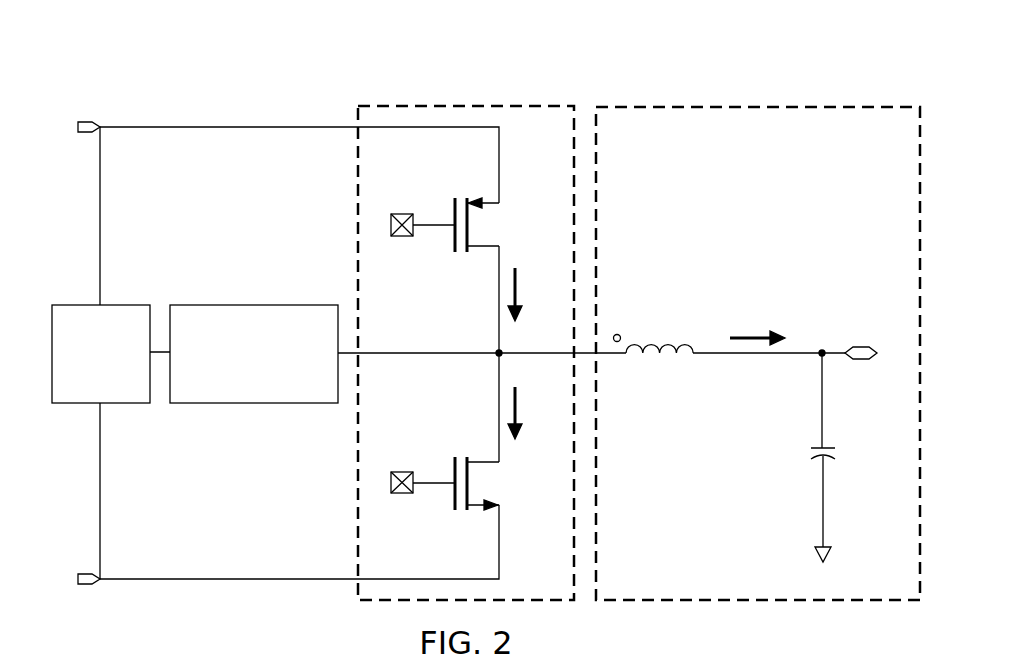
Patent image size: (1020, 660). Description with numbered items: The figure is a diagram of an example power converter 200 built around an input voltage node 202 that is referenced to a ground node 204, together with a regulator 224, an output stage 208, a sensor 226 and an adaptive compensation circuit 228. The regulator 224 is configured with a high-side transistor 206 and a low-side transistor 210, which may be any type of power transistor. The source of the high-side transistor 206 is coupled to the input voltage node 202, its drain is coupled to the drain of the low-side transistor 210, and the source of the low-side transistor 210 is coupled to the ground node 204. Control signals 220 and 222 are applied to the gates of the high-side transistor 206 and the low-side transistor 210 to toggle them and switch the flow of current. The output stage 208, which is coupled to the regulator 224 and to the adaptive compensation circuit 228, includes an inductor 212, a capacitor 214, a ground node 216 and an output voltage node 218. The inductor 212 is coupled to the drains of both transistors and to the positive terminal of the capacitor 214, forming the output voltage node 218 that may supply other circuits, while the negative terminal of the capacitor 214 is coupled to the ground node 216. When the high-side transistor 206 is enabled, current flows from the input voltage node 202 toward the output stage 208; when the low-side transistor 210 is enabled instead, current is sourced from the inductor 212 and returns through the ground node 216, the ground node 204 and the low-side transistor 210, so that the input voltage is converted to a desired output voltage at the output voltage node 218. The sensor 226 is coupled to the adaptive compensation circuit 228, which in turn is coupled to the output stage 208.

The power converter 200 is at (305, 62).
The input voltage node 202 is at (85, 122).
The ground node 204 is at (88, 586).
The high-side transistor 206 is at (452, 198).
The output stage 208 is at (790, 98).
The low-side transistor 210 is at (452, 497).
The inductor 212 is at (688, 337).
The capacitor 214 is at (838, 452).
The ground node 216 is at (832, 556).
The output voltage node 218 is at (855, 346).
The control signal 220 is at (402, 214).
The control signal 222 is at (402, 493).
The regulator 224 is at (436, 98).
The sensor 226 is at (81, 384).
The adaptive compensation circuit 228 is at (253, 305).